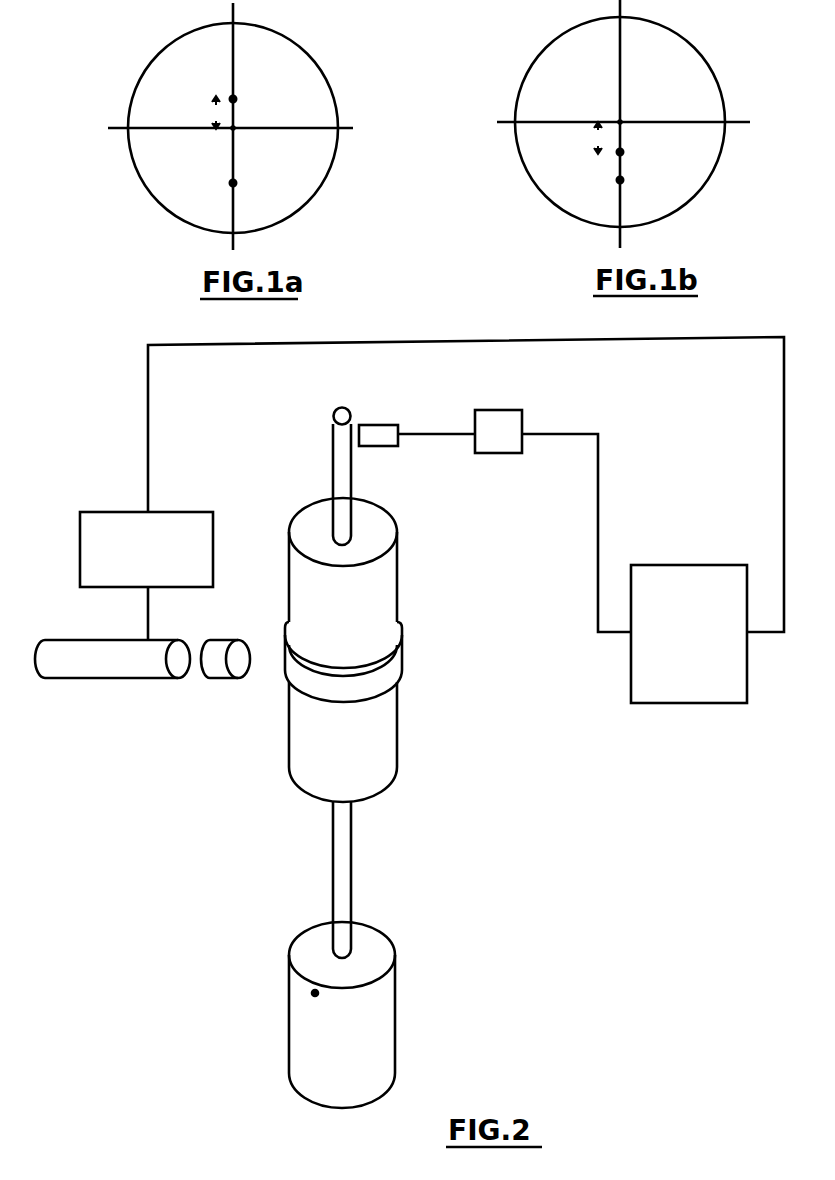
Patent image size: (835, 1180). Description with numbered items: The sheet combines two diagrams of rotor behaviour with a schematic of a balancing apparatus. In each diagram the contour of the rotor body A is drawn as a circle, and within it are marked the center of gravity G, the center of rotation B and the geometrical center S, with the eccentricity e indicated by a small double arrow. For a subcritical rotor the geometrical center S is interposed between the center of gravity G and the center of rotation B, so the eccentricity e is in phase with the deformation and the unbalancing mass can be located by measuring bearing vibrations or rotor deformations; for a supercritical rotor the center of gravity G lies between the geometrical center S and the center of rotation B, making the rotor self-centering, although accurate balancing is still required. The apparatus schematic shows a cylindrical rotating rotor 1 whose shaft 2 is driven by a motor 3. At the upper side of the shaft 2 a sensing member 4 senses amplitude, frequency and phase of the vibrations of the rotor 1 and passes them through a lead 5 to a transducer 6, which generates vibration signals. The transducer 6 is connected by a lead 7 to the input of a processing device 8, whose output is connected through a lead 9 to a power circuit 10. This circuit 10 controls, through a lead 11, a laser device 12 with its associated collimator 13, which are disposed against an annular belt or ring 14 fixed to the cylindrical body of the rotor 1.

In FIG. 2, the cylindrical rotating rotor 1 is at (397, 566).
In FIG. 2, the shaft 2 is at (334, 442).
In FIG. 2, the motor 3 is at (293, 1025).
In FIG. 2, the sensing member 4 is at (380, 425).
In FIG. 2, the lead 5 is at (433, 433).
In FIG. 2, the transducer 6 is at (505, 412).
In FIG. 2, the lead 7 is at (600, 468).
In FIG. 2, the processing device 8 is at (686, 690).
In FIG. 2, the lead 9 is at (372, 341).
In FIG. 2, the power circuit 10 is at (110, 518).
In FIG. 2, the lead 11 is at (148, 618).
In FIG. 2, the laser device 12 is at (93, 670).
In FIG. 2, the collimator 13 is at (220, 672).
In FIG. 2, the annular belt or ring 14 is at (372, 680).
In FIG. 1a, the contour of the rotor body A is at (298, 45).
In FIG. 1b, the contour of the rotor body A is at (688, 41).
In FIG. 1a, the geometrical center S is at (243, 142).
In FIG. 1b, the geometrical center S is at (631, 111).
In FIG. 1a, the center of gravity G is at (244, 100).
In FIG. 1b, the center of gravity G is at (631, 153).
In FIG. 1a, the center of rotation B is at (243, 184).
In FIG. 1b, the center of rotation B is at (630, 181).
In FIG. 1a, the eccentricity e is at (215, 112).
In FIG. 1b, the eccentricity e is at (597, 138).